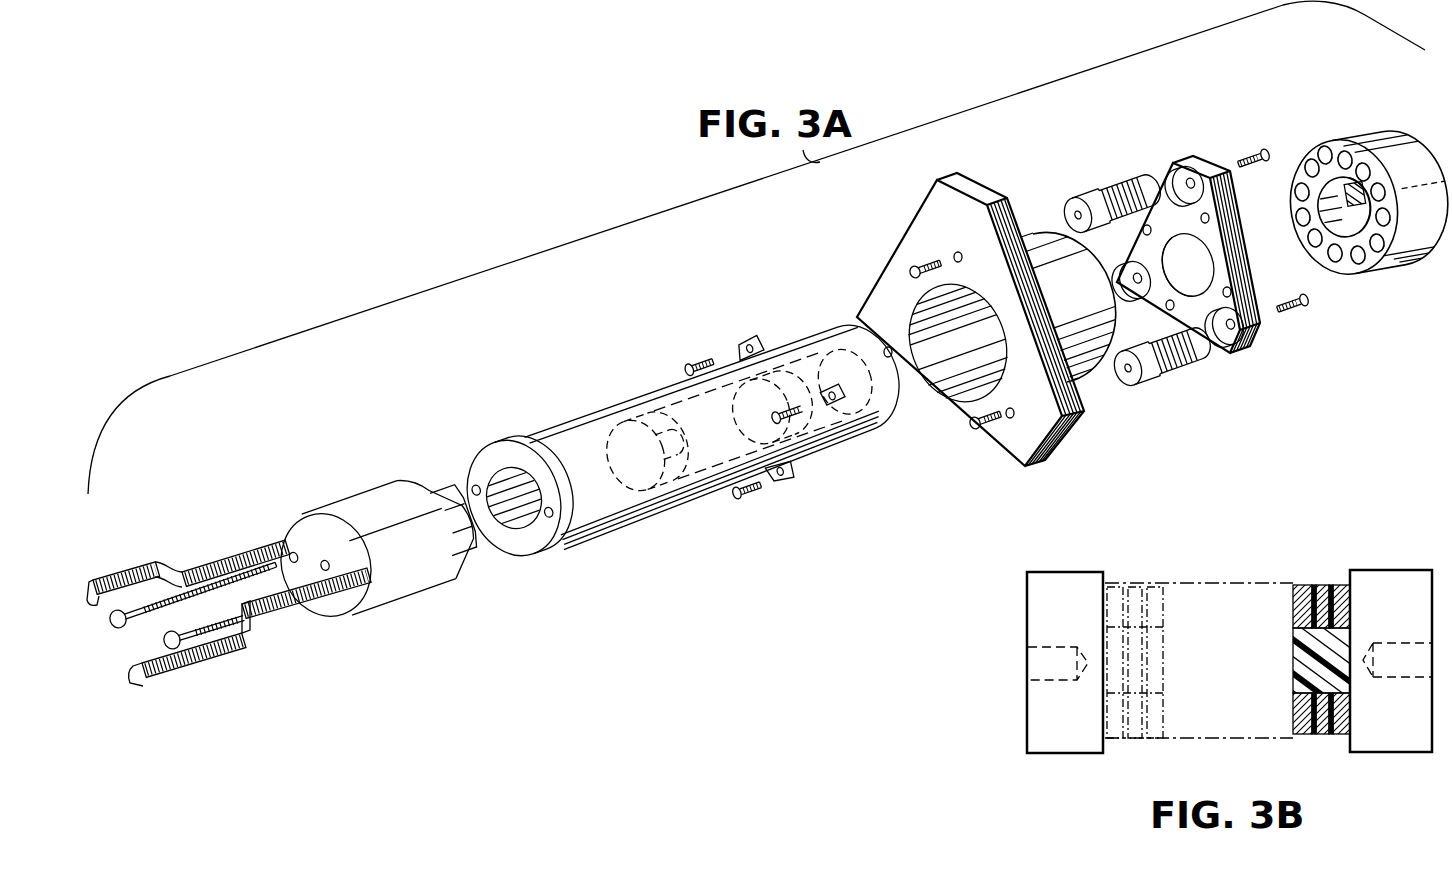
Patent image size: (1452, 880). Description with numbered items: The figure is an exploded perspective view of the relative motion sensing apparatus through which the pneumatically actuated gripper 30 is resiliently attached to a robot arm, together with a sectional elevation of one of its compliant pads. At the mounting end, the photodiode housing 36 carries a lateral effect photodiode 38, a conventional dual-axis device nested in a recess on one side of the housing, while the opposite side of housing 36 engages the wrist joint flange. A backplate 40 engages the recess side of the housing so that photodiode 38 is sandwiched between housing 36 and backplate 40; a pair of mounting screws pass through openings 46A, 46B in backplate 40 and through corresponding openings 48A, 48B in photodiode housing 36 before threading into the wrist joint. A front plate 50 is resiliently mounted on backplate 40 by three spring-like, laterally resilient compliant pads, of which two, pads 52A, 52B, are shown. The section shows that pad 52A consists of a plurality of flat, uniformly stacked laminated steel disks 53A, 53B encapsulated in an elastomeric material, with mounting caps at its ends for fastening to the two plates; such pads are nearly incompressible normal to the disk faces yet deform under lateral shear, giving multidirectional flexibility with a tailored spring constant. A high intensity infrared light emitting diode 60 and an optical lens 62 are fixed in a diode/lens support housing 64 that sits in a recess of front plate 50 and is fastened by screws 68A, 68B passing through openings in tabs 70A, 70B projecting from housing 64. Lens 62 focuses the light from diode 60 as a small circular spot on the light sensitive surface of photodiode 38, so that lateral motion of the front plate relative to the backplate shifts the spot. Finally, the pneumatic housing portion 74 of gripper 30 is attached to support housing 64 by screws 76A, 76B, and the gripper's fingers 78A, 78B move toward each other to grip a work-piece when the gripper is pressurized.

In FIG. 3A, the pneumatically actuated gripper 30 is at (280, 511).
In FIG. 3A, the photodiode housing 36 is at (1365, 140).
In FIG. 3A, the lateral effect photodiode 38 is at (1337, 177).
In FIG. 3A, the backplate 40 is at (1190, 153).
In FIG. 3A, the mounting screw accepting opening 46A is at (1151, 231).
In FIG. 3A, the mounting screw accepting opening 46B is at (1230, 290).
In FIG. 3A, the opening in photodiode housing 48A is at (1310, 176).
In FIG. 3A, the opening in photodiode housing 48B is at (1362, 240).
In FIG. 3A, the front plate 50 is at (974, 192).
In FIG. 3A, the compliant pad 52A is at (1112, 183).
In FIG. 3B, the compliant pad 52A is at (1203, 562).
In FIG. 3A, the compliant pad 52B is at (1174, 373).
In FIG. 3B, the laminated steel disk 53A is at (1338, 585).
In FIG. 3B, the laminated steel disk 53B is at (1325, 585).
In FIG. 3A, the high intensity infrared light emitting diode 60 is at (608, 433).
In FIG. 3A, the optical lens 62 is at (792, 340).
In FIG. 3A, the diode/lens support housing 64 is at (542, 433).
In FIG. 3A, the screw 68A is at (700, 358).
In FIG. 3A, the screw 68B is at (753, 496).
In FIG. 3A, the tab 70A is at (748, 345).
In FIG. 3A, the tab 70B is at (787, 478).
In FIG. 3A, the pneumatic housing portion 74 is at (347, 502).
In FIG. 3A, the screw 76A is at (155, 562).
In FIG. 3A, the screw 76B is at (188, 670).
In FIG. 3A, the finger 78A is at (233, 552).
In FIG. 3A, the finger 78B is at (240, 638).